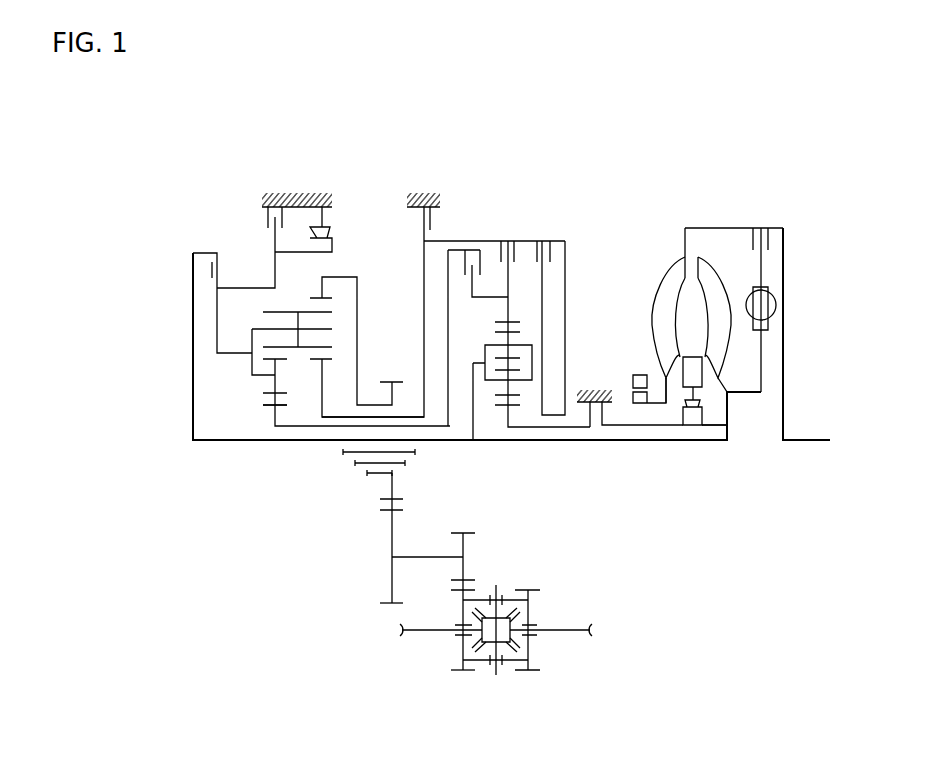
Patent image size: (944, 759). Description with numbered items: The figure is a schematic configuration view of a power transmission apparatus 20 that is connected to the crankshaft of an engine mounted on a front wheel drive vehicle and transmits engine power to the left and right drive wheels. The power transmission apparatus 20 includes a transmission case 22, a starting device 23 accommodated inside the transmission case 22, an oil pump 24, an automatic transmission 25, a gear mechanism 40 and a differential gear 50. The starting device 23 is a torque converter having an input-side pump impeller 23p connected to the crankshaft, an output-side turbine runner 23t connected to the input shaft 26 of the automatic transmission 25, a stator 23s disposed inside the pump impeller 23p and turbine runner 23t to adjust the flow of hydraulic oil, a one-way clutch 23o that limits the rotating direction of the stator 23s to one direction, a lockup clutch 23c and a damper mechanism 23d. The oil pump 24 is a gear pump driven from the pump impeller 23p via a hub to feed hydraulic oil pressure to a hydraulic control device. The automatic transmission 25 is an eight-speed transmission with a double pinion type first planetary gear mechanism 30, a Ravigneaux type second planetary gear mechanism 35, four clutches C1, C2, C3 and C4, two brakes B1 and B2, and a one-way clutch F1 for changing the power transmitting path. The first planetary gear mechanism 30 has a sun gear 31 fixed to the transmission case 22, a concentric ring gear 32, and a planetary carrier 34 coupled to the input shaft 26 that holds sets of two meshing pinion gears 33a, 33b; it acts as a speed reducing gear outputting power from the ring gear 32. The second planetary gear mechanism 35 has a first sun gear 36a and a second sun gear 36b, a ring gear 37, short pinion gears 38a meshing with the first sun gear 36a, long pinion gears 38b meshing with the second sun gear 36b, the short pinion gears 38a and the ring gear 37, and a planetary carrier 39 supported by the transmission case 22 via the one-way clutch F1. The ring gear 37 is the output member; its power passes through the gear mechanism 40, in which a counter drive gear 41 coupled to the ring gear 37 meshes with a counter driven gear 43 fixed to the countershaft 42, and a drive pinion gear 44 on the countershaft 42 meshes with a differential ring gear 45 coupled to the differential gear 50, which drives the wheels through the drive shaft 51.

The power transmission apparatus 20 is at (546, 160).
The transmission case 22 is at (292, 193).
The automatic transmission 25 is at (406, 193).
The brake B1 is at (437, 222).
The brake B2 is at (266, 224).
The clutch C1 is at (480, 265).
The clutch C2 is at (210, 265).
The clutch C3 is at (518, 256).
The clutch C4 is at (553, 256).
The one-way clutch F1 is at (335, 242).
The starting device 23 is at (672, 248).
The pump impeller 23p is at (660, 287).
The turbine runner 23t is at (719, 277).
The lockup clutch 23c is at (775, 243).
The damper mechanism 23d is at (779, 318).
The stator 23s is at (693, 362).
The one-way clutch 23o is at (712, 417).
The oil pump 24 is at (627, 396).
The input shaft 26 is at (703, 440).
The first planetary gear mechanism 30 is at (485, 330).
The sun gear 31 is at (503, 407).
The ring gear 32 is at (520, 318).
The pinion gear 33a is at (518, 368).
The pinion gear 33b is at (521, 332).
The planetary carrier 34 is at (490, 347).
The second planetary gear mechanism 35 is at (243, 403).
The first sun gear 36a is at (266, 407).
The second sun gear 36b is at (312, 363).
The ring gear 37 is at (330, 297).
The short pinion gear 38a is at (270, 384).
The long pinion gear 38b is at (265, 310).
The planetary carrier 39 is at (252, 343).
The gear mechanism 40 is at (380, 527).
The counter drive gear 41 is at (380, 497).
The countershaft 42 is at (418, 556).
The counter driven gear 43 is at (391, 576).
The drive pinion gear 44 is at (468, 534).
The differential ring gear 45 is at (455, 672).
The differential gear 50 is at (552, 612).
The drive shaft 51 is at (431, 635).